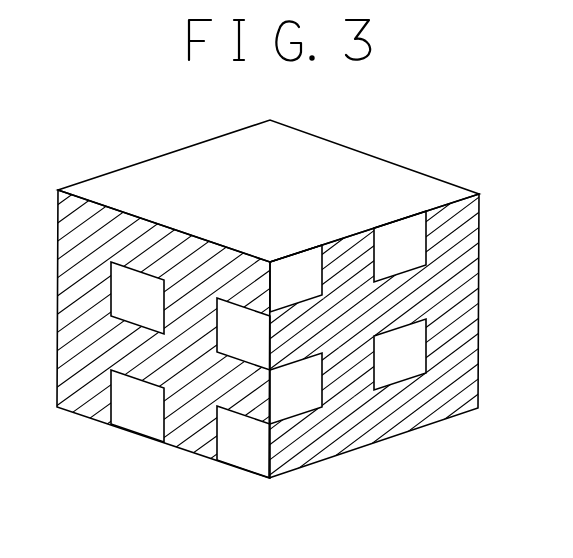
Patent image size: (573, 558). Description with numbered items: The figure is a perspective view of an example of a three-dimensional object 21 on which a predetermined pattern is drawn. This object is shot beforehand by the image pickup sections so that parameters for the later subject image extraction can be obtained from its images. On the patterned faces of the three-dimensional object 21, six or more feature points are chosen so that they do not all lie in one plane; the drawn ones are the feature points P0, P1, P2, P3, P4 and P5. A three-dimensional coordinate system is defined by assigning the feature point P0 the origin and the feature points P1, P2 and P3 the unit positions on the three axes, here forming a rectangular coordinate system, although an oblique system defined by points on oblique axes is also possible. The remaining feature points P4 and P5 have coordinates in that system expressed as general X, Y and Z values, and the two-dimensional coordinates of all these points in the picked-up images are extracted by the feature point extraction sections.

The 3-D object 21 is at (155, 168).
The feature point P0 is at (271, 422).
The feature point P1 is at (322, 407).
The feature point P2 is at (218, 408).
The feature point P3 is at (298, 306).
The feature point P4 is at (325, 297).
The feature point P5 is at (222, 343).